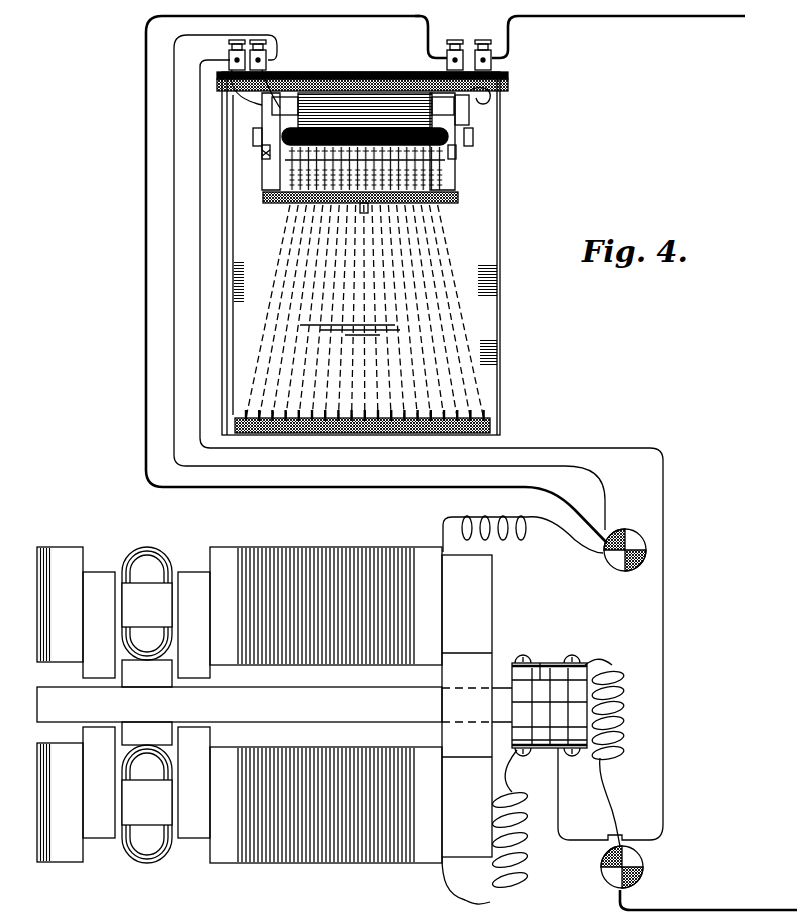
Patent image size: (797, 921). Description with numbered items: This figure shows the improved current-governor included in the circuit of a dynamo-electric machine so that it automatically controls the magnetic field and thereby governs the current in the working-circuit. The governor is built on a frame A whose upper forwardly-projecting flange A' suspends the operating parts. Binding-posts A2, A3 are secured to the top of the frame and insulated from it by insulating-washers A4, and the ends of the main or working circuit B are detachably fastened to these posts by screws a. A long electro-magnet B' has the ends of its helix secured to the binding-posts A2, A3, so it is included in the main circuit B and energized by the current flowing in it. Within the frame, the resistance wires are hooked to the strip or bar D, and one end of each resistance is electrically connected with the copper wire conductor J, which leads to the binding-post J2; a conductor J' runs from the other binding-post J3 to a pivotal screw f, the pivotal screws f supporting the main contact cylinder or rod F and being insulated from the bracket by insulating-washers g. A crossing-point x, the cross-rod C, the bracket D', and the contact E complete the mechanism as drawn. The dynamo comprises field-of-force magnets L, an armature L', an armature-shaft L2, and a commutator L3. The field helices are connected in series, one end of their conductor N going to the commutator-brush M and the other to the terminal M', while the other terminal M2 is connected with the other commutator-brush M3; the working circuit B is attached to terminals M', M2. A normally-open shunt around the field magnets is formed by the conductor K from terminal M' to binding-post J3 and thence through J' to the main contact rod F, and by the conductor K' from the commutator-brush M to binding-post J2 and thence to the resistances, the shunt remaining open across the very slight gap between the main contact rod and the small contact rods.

The frame A is at (362, 253).
The top portion or forwardly-projecting flange A' is at (358, 121).
The binding-post A2 is at (447, 54).
The binding-post A3 is at (491, 54).
The insulating-washers A4 is at (500, 76).
The screws a is at (383, 128).
The main circuit B is at (471, 461).
The electro-magnet B' is at (363, 96).
The type bar cross rod C is at (433, 157).
The strip or bar D is at (373, 187).
The bracket D' is at (474, 113).
The contact spring E is at (300, 170).
The main contact cylinder or rod F is at (456, 153).
The pivotal screws f is at (253, 136).
The insulating-washers g is at (260, 153).
The copper wire conductor J is at (358, 313).
The conductor J' is at (255, 99).
The binding-post J2 is at (229, 54).
The binding-post J3 is at (267, 60).
The conductor K is at (389, 282).
The conductor K' is at (431, 450).
The field-of-force magnets L is at (239, 705).
The armature L' is at (147, 705).
The armature-shaft L2 is at (274, 706).
The commutator L3 is at (542, 672).
The commutator-brush M is at (546, 723).
The binding-post or terminal M' is at (625, 560).
The binding-post or terminal M2 is at (637, 867).
The commutator-brush M3 is at (605, 746).
The conductor N is at (522, 710).
The wire crossings x is at (328, 358).